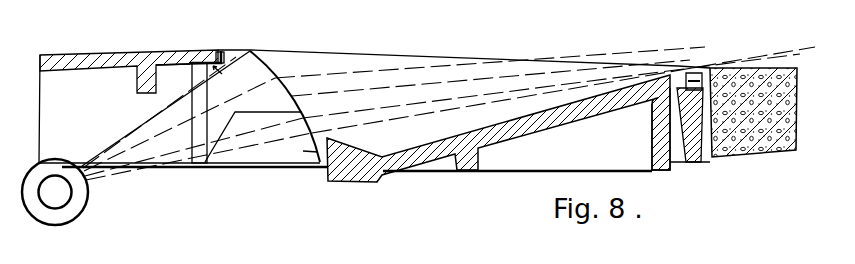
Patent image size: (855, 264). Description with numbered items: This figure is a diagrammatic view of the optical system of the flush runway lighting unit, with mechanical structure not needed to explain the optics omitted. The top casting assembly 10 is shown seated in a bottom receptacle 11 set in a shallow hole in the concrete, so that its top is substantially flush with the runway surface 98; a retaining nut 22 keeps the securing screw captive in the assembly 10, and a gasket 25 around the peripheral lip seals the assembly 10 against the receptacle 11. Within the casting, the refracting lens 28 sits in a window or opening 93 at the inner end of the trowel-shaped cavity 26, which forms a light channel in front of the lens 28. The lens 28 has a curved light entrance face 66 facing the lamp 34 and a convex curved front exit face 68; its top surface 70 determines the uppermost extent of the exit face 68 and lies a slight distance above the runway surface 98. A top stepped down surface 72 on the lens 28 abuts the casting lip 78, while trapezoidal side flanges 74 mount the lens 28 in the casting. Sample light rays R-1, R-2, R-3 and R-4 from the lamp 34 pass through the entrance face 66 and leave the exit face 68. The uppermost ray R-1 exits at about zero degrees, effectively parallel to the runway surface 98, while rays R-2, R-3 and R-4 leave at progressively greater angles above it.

The top casting assembly 10 is at (130, 56).
The casting lip 78 is at (193, 54).
The top stepped down surface 72 is at (205, 58).
The top surface 70 is at (249, 50).
The window or opening 93 is at (265, 112).
The convex curved front exit face 68 is at (294, 97).
The trapezoidal side flanges 74 is at (290, 128).
The trowel-shaped cavity 26 is at (448, 138).
The curved light entrance face 66 is at (198, 148).
The lens 28 is at (268, 193).
The lamp 34 is at (72, 218).
The retaining nut 22 is at (689, 73).
The gasket 25 is at (658, 114).
The bottom receptacle 11 is at (695, 150).
The runway surface 98 is at (770, 143).
The light ray R-1 is at (107, 147).
The light ray R-2 is at (147, 128).
The light ray R-3 is at (167, 150).
The light ray R-4 is at (120, 178).